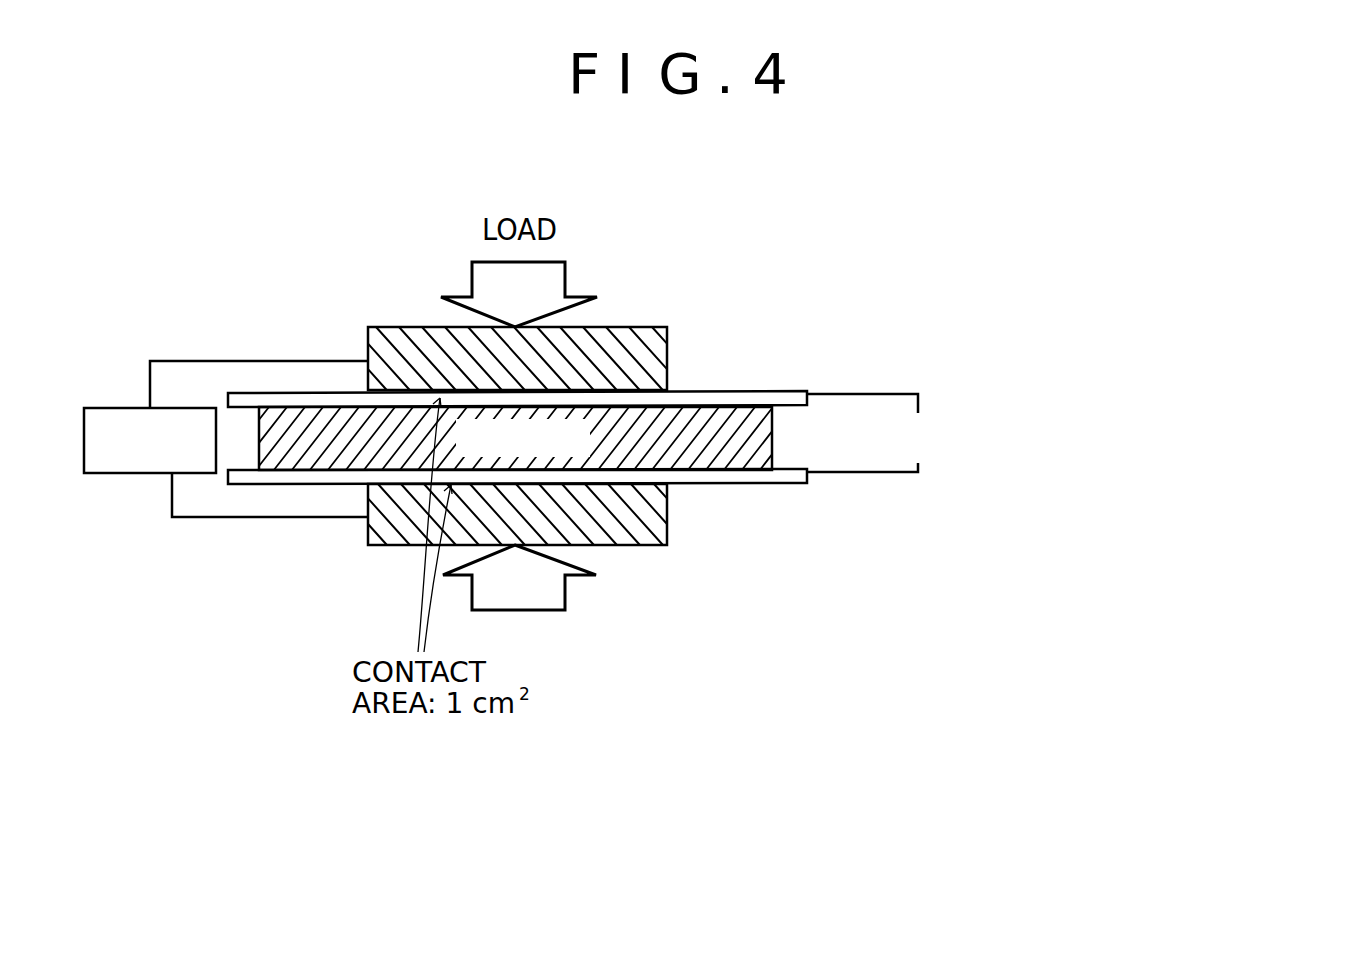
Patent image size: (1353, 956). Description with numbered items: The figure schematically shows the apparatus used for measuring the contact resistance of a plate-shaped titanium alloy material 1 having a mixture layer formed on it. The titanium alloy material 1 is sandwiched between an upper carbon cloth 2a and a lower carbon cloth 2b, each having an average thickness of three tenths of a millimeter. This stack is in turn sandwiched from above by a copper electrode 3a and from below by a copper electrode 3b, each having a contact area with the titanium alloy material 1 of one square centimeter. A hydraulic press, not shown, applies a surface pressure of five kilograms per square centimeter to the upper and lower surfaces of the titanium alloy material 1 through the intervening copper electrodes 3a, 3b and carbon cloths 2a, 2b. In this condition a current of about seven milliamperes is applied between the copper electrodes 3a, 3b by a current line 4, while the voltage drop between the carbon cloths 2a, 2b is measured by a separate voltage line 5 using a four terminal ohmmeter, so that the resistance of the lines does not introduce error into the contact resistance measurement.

The titanium alloy material 1 is at (718, 422).
The carbon cloth 2a is at (799, 388).
The carbon cloth 2b is at (797, 485).
The copper electrode 3a is at (632, 338).
The copper electrode 3b is at (668, 522).
The current line 4 is at (150, 378).
The voltage line 5 is at (922, 402).